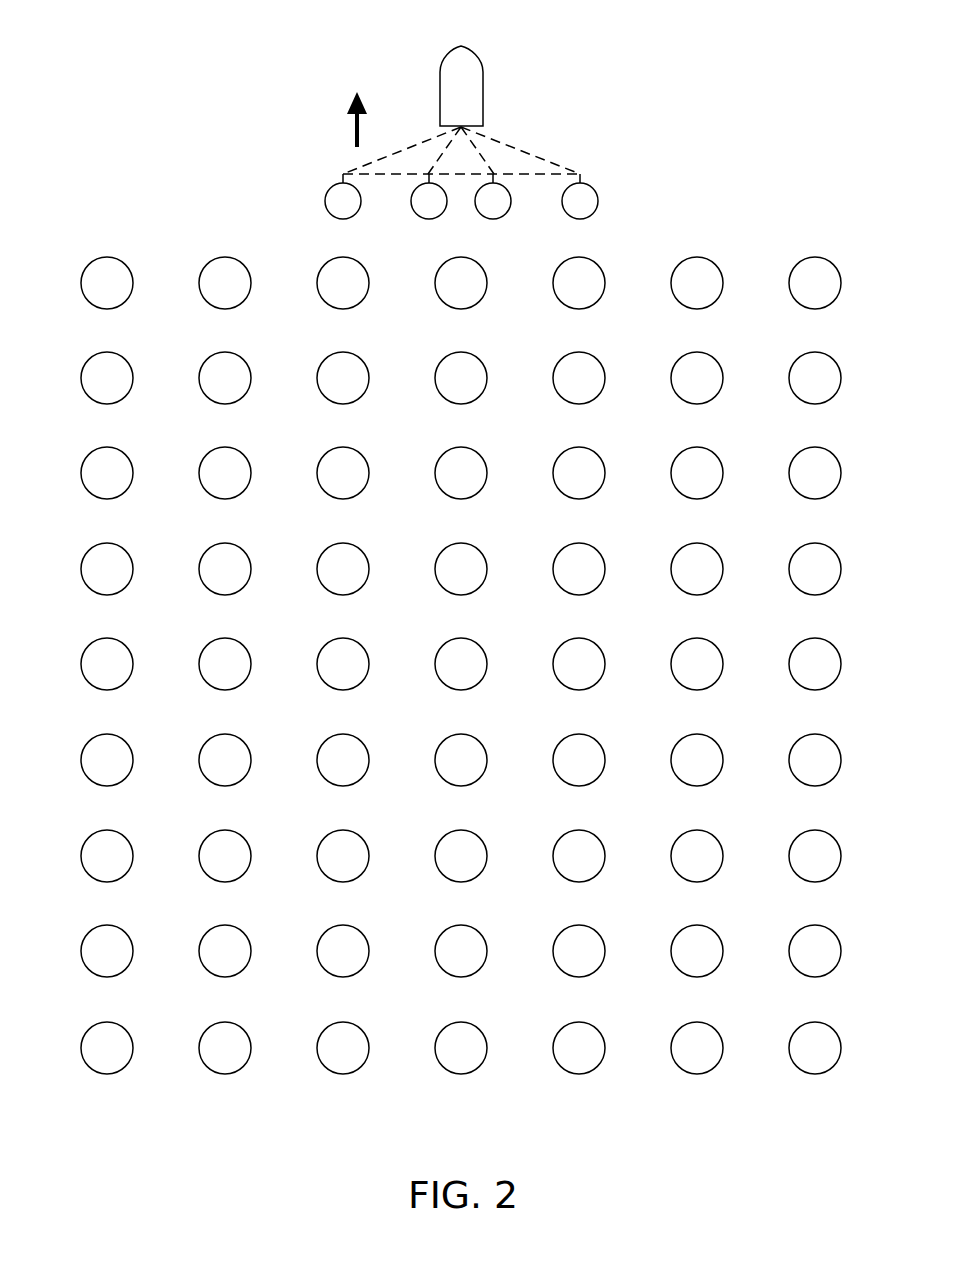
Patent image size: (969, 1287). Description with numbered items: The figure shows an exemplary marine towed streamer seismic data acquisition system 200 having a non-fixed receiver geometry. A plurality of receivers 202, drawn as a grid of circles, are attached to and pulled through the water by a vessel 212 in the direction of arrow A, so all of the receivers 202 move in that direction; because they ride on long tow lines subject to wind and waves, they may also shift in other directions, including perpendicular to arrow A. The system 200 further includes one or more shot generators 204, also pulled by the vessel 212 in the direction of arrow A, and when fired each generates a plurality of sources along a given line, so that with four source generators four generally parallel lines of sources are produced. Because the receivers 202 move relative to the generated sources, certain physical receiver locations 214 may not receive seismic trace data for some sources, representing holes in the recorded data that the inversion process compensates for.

The seismic data acquisition system 200 is at (151, 95).
The vessel 212 is at (440, 80).
The shot generators 204 is at (509, 158).
The receivers 202 is at (82, 282).
The physical receiver locations 214 is at (250, 1048).